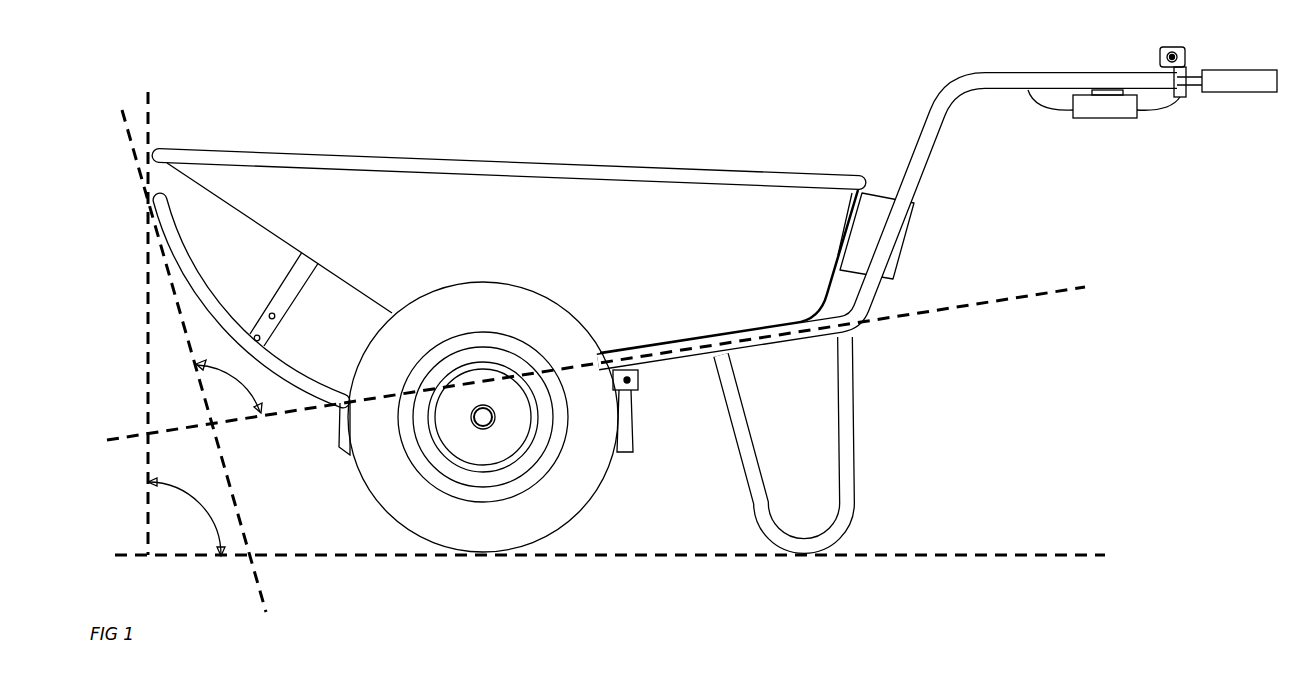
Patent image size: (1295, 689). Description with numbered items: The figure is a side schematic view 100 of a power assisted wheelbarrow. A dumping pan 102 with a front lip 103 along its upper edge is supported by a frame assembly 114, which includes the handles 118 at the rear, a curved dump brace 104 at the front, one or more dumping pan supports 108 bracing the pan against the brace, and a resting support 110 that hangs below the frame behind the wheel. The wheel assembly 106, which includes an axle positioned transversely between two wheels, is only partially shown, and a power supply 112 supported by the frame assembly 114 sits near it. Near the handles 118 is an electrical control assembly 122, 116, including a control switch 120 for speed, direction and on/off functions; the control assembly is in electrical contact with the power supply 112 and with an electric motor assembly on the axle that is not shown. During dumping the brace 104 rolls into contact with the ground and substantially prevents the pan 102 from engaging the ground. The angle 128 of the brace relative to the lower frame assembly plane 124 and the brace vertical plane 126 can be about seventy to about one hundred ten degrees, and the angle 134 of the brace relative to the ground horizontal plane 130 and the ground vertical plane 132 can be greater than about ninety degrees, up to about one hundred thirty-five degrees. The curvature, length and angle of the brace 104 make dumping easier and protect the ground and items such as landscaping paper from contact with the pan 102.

The side schematic view 100 is at (803, 86).
The dumping pan 102 is at (612, 193).
The front lip 103 is at (160, 150).
The dump brace 104 is at (188, 288).
The wheel assembly 106 is at (580, 490).
The dumping pan support 108 is at (293, 288).
The resting support 110 is at (845, 437).
The power supply 112 is at (623, 428).
The frame assembly 114 is at (880, 268).
The electrical control assembly 116 is at (867, 222).
The handles 118 is at (1250, 83).
The control switch 120 is at (1160, 55).
The electrical control assembly 122 is at (1105, 108).
The lower frame assembly plane 124 is at (578, 372).
The brace vertical plane 126 is at (202, 374).
The angle 128 is at (229, 386).
The ground horizontal plane 130 is at (591, 557).
The ground vertical plane 132 is at (149, 315).
The angle 134 is at (186, 517).